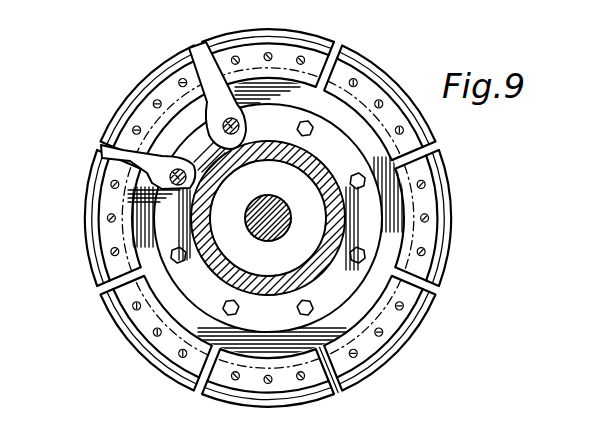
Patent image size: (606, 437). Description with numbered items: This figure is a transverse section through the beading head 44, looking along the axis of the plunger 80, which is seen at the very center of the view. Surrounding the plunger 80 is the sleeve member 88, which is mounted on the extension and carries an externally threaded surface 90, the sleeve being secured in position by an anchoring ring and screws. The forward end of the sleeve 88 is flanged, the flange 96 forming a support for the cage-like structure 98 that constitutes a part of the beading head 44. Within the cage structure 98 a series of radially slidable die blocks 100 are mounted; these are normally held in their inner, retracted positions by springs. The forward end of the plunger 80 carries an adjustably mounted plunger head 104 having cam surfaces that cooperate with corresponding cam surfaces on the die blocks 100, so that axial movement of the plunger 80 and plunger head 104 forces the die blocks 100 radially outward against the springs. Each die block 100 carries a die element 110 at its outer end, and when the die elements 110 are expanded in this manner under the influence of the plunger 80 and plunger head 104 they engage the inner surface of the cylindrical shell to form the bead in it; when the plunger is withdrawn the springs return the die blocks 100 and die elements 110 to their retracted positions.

The beading head 44 is at (293, 218).
The plunger 80 is at (268, 241).
The sleeve member 88 is at (200, 302).
The externally threaded surface 90 is at (188, 220).
The flange 96 is at (383, 352).
The cage-like structure 98 is at (428, 295).
The die block 100 is at (101, 146).
The plunger head 104 is at (290, 175).
The die element 110 is at (457, 215).